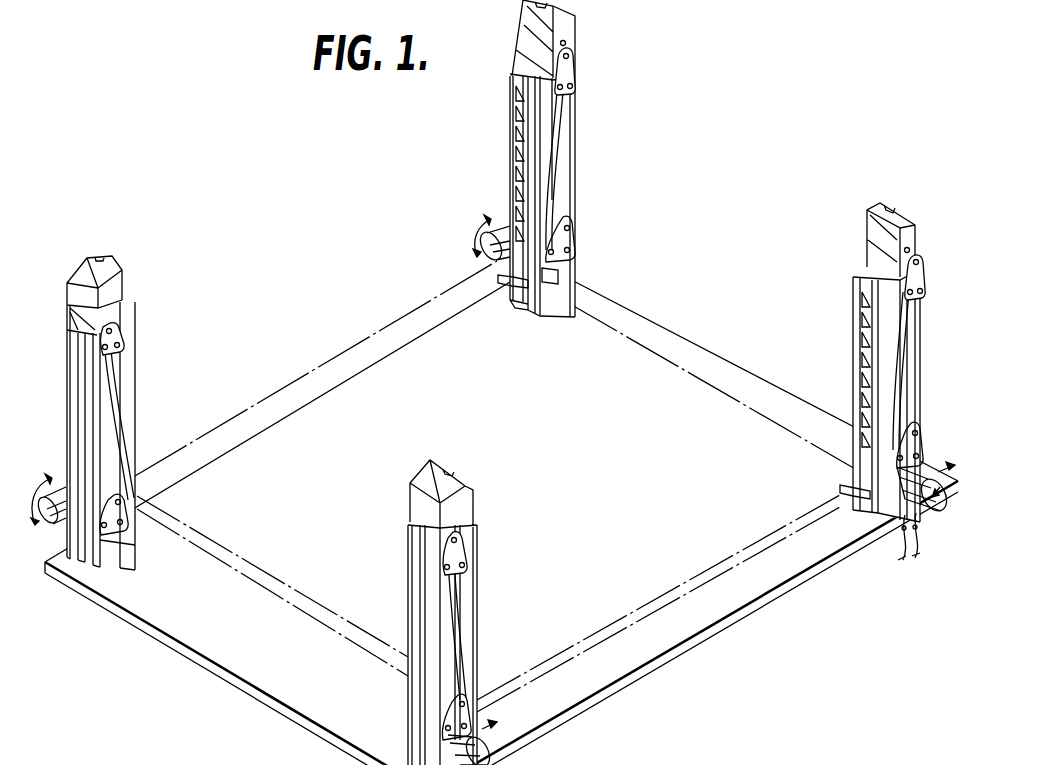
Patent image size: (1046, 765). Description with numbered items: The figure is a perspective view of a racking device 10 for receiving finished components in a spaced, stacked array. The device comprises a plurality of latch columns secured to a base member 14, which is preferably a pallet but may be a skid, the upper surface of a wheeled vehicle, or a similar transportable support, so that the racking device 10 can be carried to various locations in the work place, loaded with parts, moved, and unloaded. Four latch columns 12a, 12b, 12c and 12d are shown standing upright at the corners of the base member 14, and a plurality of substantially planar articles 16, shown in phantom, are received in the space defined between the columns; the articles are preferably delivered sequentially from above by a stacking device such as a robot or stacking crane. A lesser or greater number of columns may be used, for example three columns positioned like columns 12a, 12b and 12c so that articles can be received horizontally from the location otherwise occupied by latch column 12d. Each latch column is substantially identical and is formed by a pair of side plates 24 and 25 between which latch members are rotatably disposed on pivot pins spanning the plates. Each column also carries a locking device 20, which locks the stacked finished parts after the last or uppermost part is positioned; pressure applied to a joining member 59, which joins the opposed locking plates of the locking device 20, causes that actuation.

The racking device 10 is at (205, 210).
The latch column 12a is at (558, 158).
The latch column 12b is at (852, 318).
The latch column 12c is at (480, 509).
The latch column 12d is at (136, 337).
The base member 14 is at (725, 607).
The planar articles 16 is at (690, 364).
The locking device 20 is at (577, 178).
The side plate 24 is at (576, 31).
The side plate 25 is at (518, 26).
The joining member 59 is at (74, 280).